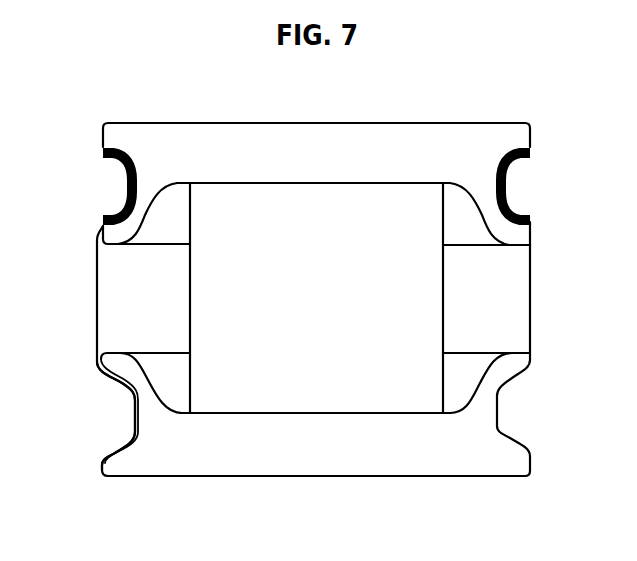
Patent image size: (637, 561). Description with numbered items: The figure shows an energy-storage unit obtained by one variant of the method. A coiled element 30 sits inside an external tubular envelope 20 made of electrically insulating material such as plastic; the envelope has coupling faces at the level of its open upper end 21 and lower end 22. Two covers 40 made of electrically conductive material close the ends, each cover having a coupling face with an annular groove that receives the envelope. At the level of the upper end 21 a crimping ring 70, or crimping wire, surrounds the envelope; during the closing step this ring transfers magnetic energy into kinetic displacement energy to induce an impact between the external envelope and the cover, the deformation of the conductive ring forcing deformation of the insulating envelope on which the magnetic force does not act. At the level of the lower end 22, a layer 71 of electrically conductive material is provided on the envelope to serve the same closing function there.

The external tubular envelope 20 is at (531, 305).
The upper end 21 is at (104, 147).
The lower end 22 is at (102, 465).
The coiled element 30 is at (410, 275).
The cover 40 is at (345, 139).
The crimping ring 70 is at (500, 183).
The layer of electrically conductive material 71 is at (113, 440).